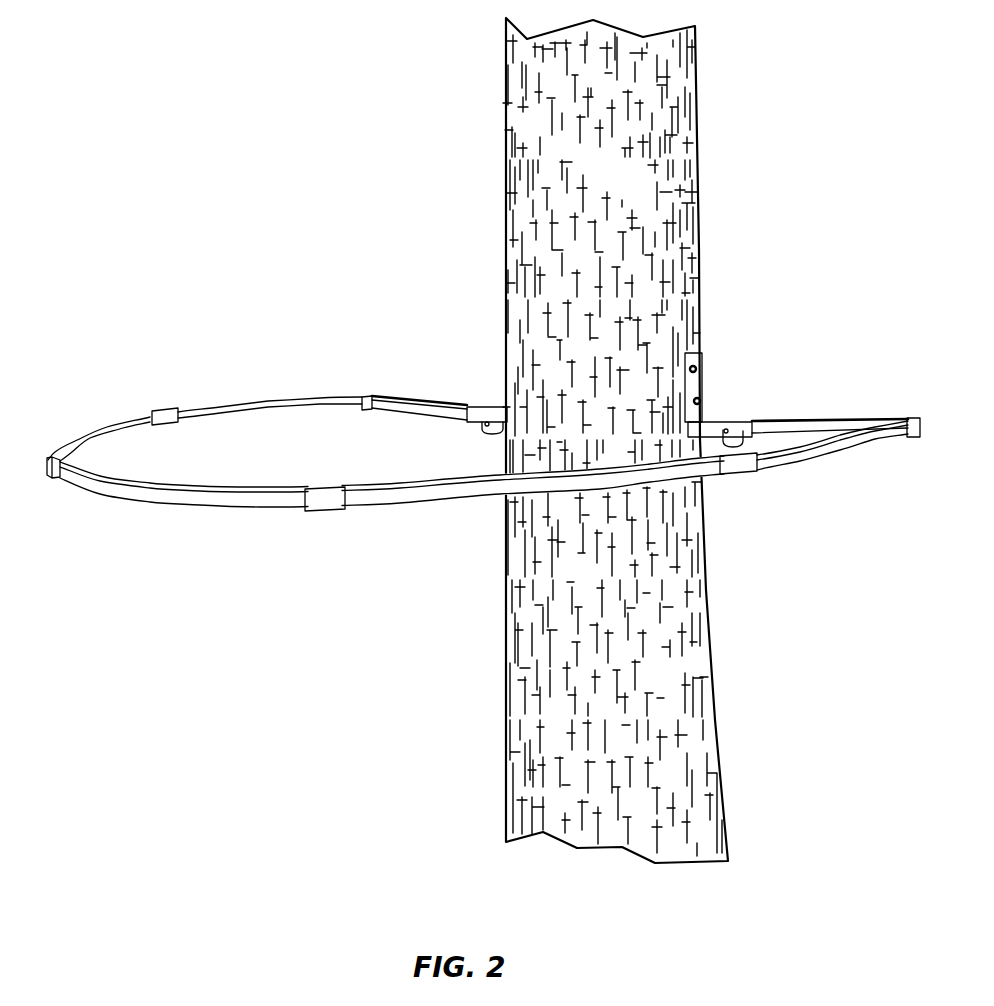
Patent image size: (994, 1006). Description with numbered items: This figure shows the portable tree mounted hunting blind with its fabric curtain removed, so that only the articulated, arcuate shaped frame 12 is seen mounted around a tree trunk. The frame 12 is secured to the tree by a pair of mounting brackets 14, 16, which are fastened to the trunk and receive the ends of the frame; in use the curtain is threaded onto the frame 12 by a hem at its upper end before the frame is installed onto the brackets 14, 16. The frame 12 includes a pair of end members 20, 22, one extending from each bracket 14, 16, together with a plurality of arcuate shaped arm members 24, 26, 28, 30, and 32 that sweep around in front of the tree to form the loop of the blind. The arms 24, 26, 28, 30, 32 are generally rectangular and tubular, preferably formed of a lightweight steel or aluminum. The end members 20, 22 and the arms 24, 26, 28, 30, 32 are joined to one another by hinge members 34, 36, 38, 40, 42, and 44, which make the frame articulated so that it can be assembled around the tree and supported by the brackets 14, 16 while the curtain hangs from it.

The articulated arcuate shaped frame 12 is at (482, 499).
The mounting bracket 14 is at (492, 413).
The mounting bracket 16 is at (712, 430).
The end member 20 is at (418, 405).
The end member 22 is at (820, 430).
The arcuate shaped arm member 24 is at (268, 402).
The arcuate shaped arm member 26 is at (98, 432).
The arcuate shaped arm member 28 is at (172, 503).
The arcuate shaped arm member 30 is at (470, 493).
The arcuate shaped arm member 32 is at (843, 447).
The hinge member 34 is at (365, 397).
The hinge member 36 is at (165, 413).
The hinge member 38 is at (52, 478).
The hinge member 40 is at (322, 497).
The hinge member 42 is at (738, 468).
The hinge member 44 is at (912, 421).